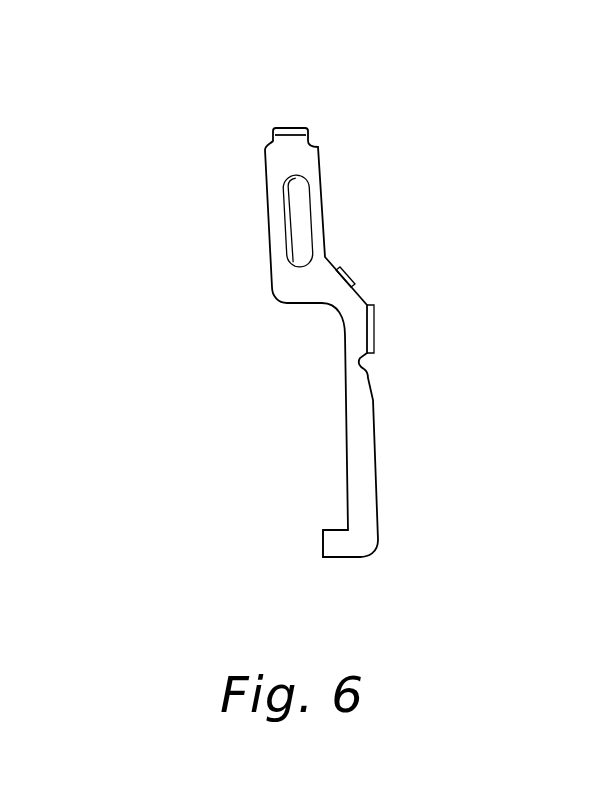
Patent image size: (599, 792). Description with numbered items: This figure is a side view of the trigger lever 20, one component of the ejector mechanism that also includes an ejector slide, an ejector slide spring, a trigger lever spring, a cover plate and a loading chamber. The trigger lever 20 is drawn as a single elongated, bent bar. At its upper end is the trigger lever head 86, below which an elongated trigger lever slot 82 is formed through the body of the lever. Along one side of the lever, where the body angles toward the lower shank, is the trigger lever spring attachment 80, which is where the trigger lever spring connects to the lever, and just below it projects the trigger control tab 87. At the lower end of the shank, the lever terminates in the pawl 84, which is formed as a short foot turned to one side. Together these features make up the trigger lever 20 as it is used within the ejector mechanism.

The trigger lever 20 is at (129, 167).
The trigger lever head 86 is at (290, 128).
The trigger lever slot 82 is at (305, 219).
The trigger lever spring attachment 80 is at (352, 270).
The trigger control tab 87 is at (375, 333).
The pawl 84 is at (343, 557).